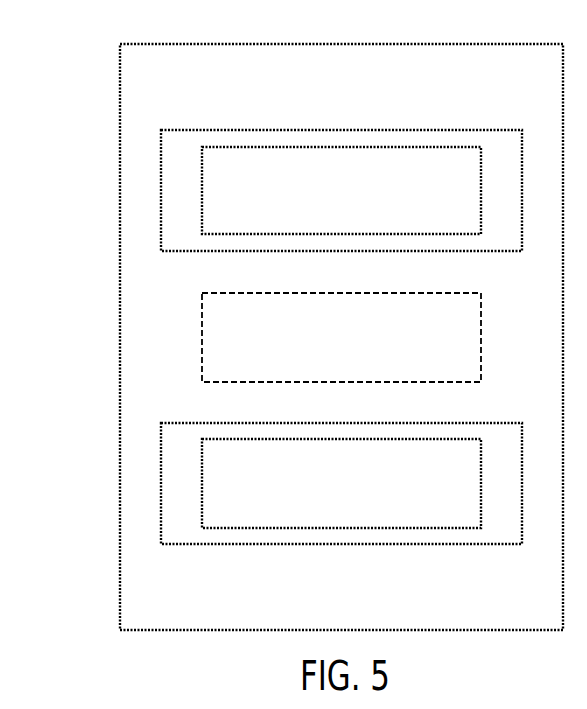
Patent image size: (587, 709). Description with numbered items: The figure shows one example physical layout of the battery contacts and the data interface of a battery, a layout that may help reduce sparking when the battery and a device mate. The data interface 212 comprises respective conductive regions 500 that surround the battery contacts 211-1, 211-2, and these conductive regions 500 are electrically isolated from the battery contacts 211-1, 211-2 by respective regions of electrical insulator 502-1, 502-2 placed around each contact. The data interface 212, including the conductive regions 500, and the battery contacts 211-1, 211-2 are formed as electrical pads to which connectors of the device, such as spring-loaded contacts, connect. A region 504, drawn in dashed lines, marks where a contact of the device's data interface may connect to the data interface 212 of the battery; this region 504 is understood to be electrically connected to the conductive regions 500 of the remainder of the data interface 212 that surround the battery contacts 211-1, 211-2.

The conductive regions 500 is at (121, 73).
The battery contact 211-1 is at (213, 182).
The region of electrical insulator 502-1 is at (161, 210).
The region 504 is at (202, 338).
The data interface 212 is at (158, 373).
The battery contact 211-2 is at (213, 475).
The region of electrical insulator 502-2 is at (161, 500).